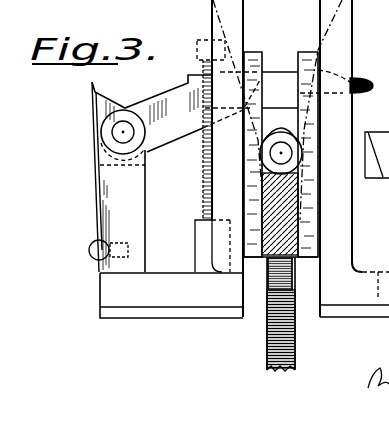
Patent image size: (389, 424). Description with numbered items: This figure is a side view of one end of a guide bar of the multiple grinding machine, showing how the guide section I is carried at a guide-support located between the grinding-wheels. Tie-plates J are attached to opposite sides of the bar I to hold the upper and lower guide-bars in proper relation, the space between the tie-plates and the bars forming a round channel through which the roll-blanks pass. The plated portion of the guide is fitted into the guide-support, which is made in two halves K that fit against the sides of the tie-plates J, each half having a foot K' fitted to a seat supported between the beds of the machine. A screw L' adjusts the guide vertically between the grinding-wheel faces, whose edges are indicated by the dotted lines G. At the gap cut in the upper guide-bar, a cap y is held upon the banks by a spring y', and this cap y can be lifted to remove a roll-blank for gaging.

The guide-support half K is at (219, 158).
The tie-plates J is at (306, 52).
The foot K' is at (244, 159).
The cap y is at (235, 106).
The spring y' is at (103, 177).
The grinding-wheel edges G is at (250, 225).
The screw L' is at (293, 314).
The guide section I is at (292, 247).